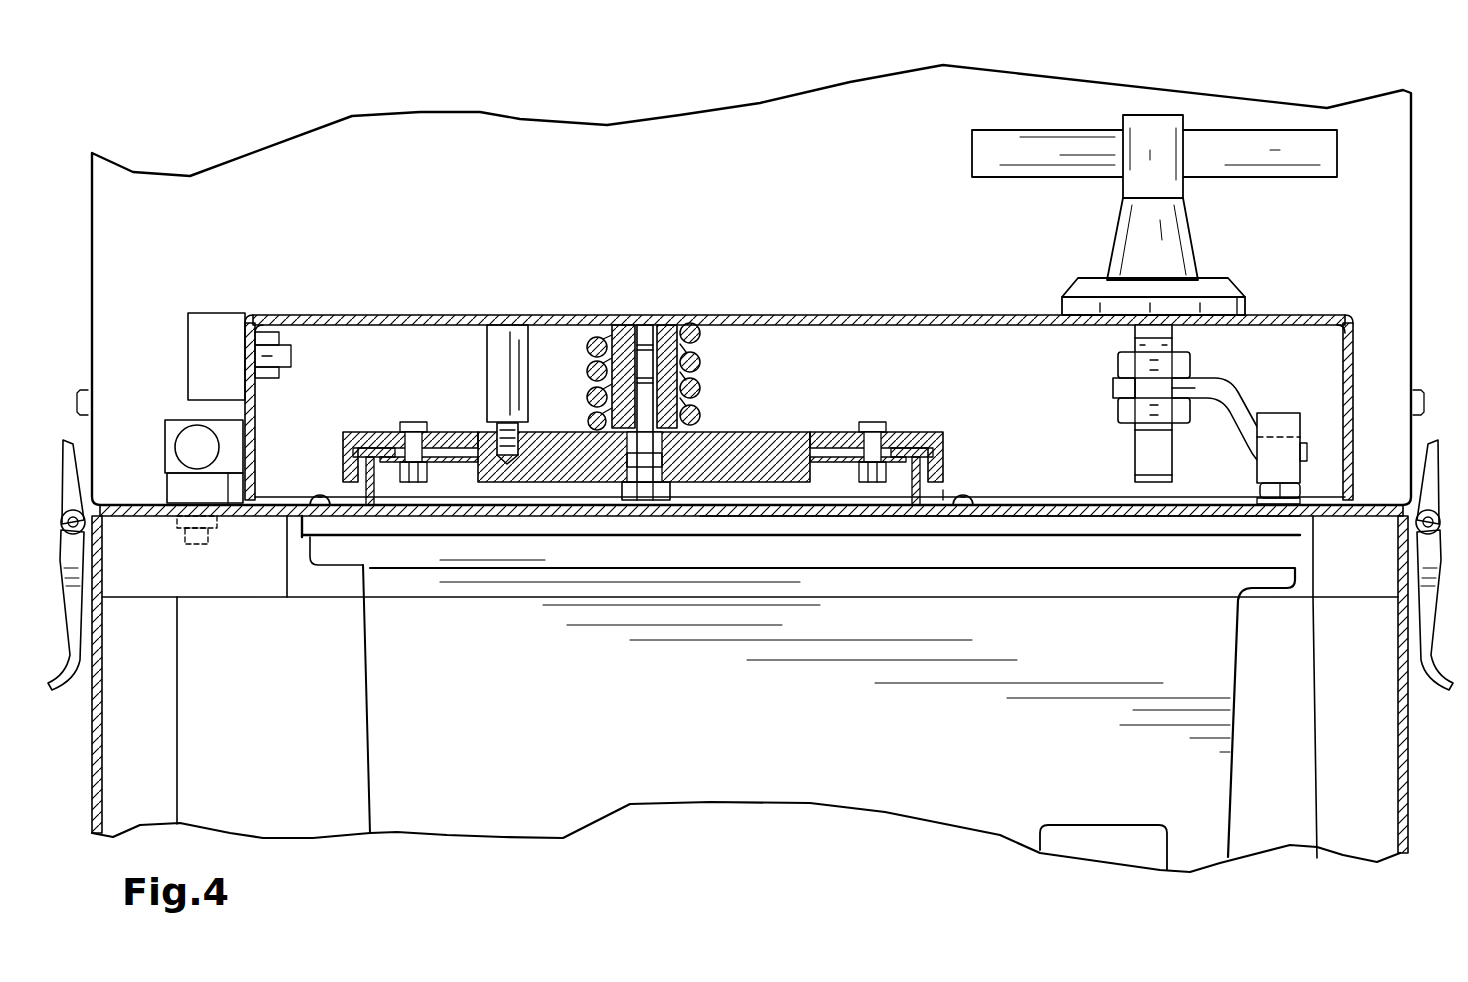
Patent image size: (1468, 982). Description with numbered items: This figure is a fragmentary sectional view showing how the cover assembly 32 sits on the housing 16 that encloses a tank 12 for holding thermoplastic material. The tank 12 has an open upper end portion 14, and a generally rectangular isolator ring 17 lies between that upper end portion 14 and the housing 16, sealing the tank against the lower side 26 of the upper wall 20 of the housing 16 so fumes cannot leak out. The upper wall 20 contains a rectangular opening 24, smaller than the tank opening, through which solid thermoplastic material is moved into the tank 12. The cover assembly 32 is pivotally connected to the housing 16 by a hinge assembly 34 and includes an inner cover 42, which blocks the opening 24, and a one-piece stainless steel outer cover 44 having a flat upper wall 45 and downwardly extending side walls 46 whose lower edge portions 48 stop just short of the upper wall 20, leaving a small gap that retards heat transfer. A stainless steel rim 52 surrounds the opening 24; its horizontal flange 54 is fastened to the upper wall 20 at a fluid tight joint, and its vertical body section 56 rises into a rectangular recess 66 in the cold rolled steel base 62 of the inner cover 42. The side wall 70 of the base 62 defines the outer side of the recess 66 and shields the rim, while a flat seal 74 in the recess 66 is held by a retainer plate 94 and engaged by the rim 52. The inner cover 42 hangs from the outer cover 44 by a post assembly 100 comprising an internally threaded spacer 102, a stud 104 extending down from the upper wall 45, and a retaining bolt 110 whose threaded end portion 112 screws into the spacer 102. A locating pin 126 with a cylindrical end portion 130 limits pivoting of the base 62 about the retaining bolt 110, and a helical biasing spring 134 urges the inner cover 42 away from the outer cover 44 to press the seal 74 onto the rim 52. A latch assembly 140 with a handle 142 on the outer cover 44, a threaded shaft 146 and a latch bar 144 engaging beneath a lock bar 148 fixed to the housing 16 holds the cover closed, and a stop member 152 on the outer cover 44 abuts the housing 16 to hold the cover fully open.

The tank 12 is at (370, 780).
The upper end portion 14 is at (368, 543).
The housing 16 is at (1407, 762).
The isolator ring 17 is at (1240, 548).
The upper wall 20 is at (1097, 508).
The rectangular opening 24 is at (675, 510).
The lower side 26 is at (135, 513).
The cover assembly 32 is at (1325, 287).
The hinge assembly 34 is at (193, 447).
The inner cover 42 is at (643, 427).
The outer cover 44 is at (1280, 314).
The upper wall 45 is at (300, 335).
The side walls 46 is at (799, 371).
The lower edge portions 48 is at (245, 512).
The rim 52 is at (946, 492).
The horizontal flange 54 is at (318, 490).
The vertical body section 56 is at (377, 472).
The base 62 is at (750, 465).
The rectangular recess 66 is at (840, 473).
The side wall 70 is at (348, 478).
The seal 74 is at (378, 460).
The retainer plate 94 is at (840, 478).
The post assembly 100 is at (673, 397).
The spacer 102 is at (670, 372).
The stud 104 is at (647, 335).
The retaining bolt 110 is at (614, 487).
The threaded end portion 112 is at (647, 398).
The locating pin 126 is at (497, 355).
The end portion 130 is at (497, 445).
The biasing spring 134 is at (693, 343).
The latch assembly 140 is at (1150, 171).
The handle 142 is at (1058, 142).
The latch bar 144 is at (1228, 400).
The shaft 146 is at (1135, 338).
The lock bar 148 is at (1283, 425).
The stop member 152 is at (221, 333).